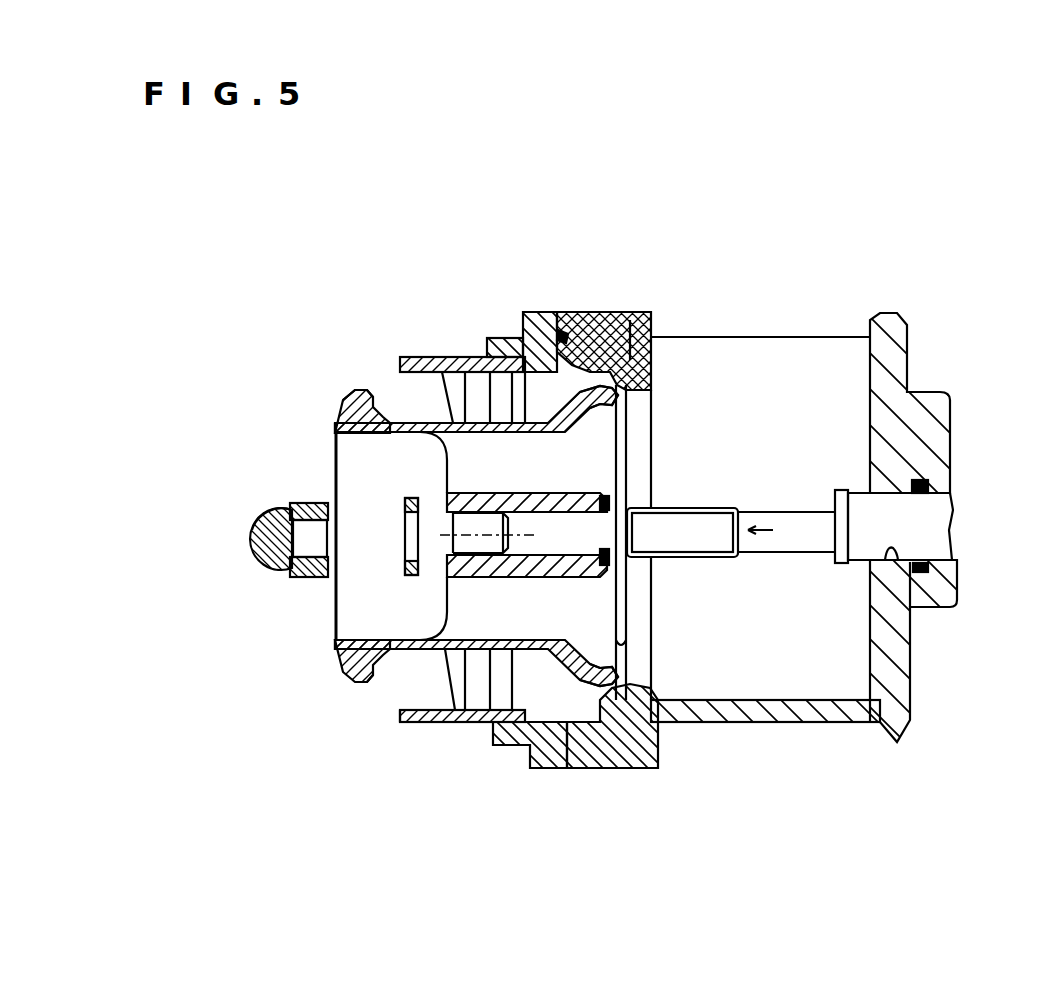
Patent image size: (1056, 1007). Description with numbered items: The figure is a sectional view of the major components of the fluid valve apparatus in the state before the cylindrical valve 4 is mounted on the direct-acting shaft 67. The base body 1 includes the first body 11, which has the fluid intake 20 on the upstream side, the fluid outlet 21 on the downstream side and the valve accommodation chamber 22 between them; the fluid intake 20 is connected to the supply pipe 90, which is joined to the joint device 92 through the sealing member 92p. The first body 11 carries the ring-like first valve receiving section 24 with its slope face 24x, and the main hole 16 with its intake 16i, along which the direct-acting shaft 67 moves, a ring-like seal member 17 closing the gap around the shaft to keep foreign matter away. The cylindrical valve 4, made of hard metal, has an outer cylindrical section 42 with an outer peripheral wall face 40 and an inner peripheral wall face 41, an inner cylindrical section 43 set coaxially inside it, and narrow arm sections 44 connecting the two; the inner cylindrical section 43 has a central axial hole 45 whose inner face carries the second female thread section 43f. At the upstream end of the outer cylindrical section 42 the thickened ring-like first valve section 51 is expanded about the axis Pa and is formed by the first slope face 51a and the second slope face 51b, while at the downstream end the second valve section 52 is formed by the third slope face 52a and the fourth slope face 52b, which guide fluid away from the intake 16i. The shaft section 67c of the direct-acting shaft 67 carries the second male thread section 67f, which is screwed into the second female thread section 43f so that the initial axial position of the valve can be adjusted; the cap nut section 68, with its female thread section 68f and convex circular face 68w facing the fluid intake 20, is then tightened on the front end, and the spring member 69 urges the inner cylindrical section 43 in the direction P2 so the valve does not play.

The base body 1 is at (763, 524).
The cylindrical valve 4 is at (460, 524).
The first body 11 is at (893, 400).
The main hole 16 is at (947, 540).
The intake of main hole 16i is at (927, 607).
The seal member 17 is at (925, 478).
The fluid intake 20 is at (460, 524).
The fluid outlet 21 is at (815, 345).
The valve accommodation chamber 22 is at (818, 673).
The first valve receiving section 24 is at (640, 378).
The slope face 24x is at (643, 330).
The outer peripheral wall face 40 is at (452, 412).
The inner peripheral wall face 41 is at (483, 432).
The outer cylindrical section 42 is at (497, 338).
The inner cylindrical section 43 is at (592, 493).
The second female thread section 43f is at (510, 534).
The arm sections 44 is at (457, 467).
The axial hole 45 is at (613, 547).
The first valve section 51 is at (357, 413).
The first slope face 51a is at (330, 415).
The second slope face 51b is at (373, 390).
The second valve section 52 is at (617, 408).
The third slope face 52a is at (637, 312).
The fourth slope face 52b is at (600, 410).
The direct-acting shaft 67 is at (923, 517).
The shaft section 67c is at (778, 545).
The second male thread section 67f is at (678, 510).
The cap nut section 68 is at (263, 550).
The female thread section 68f is at (307, 570).
The convex circular face 68w is at (255, 523).
The spring member 69 is at (835, 500).
The supply pipe 90 is at (413, 717).
The joint device 92 is at (548, 770).
The sealing member 92p is at (585, 312).
The axial urging direction P2 is at (762, 512).
The axis of cylindrical valve Pa is at (443, 537).